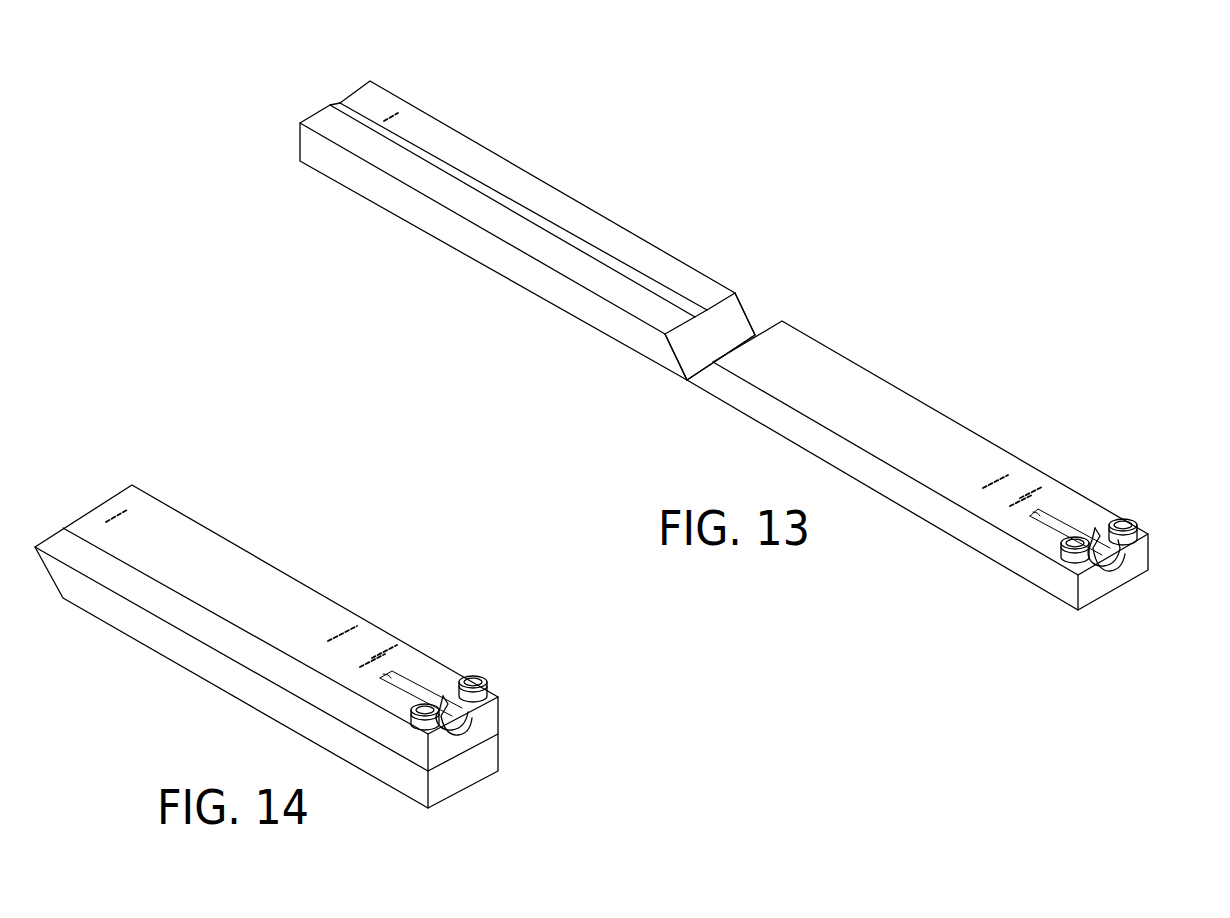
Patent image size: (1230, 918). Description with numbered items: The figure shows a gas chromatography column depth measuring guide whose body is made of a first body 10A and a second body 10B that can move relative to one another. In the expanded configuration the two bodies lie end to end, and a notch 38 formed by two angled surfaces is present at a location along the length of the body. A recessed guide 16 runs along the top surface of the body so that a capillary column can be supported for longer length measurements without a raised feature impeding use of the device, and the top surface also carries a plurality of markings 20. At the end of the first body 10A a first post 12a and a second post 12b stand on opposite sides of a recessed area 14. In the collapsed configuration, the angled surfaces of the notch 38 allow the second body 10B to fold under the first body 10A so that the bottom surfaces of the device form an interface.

In FIG. 13, the first body 10A is at (880, 400).
In FIG. 13, the second body 10B is at (503, 160).
In FIG. 13, the first post 12a is at (1127, 525).
In FIG. 14, the first post 12a is at (473, 681).
In FIG. 13, the second post 12b is at (1073, 567).
In FIG. 14, the second post 12b is at (437, 722).
In FIG. 13, the recessed area 14 is at (1103, 548).
In FIG. 14, the recessed area 14 is at (457, 712).
In FIG. 13, the guide 16 is at (565, 228).
In FIG. 13, the markings 20 is at (392, 112).
In FIG. 14, the markings 20 is at (132, 508).
In FIG. 13, the notch 38 is at (708, 330).